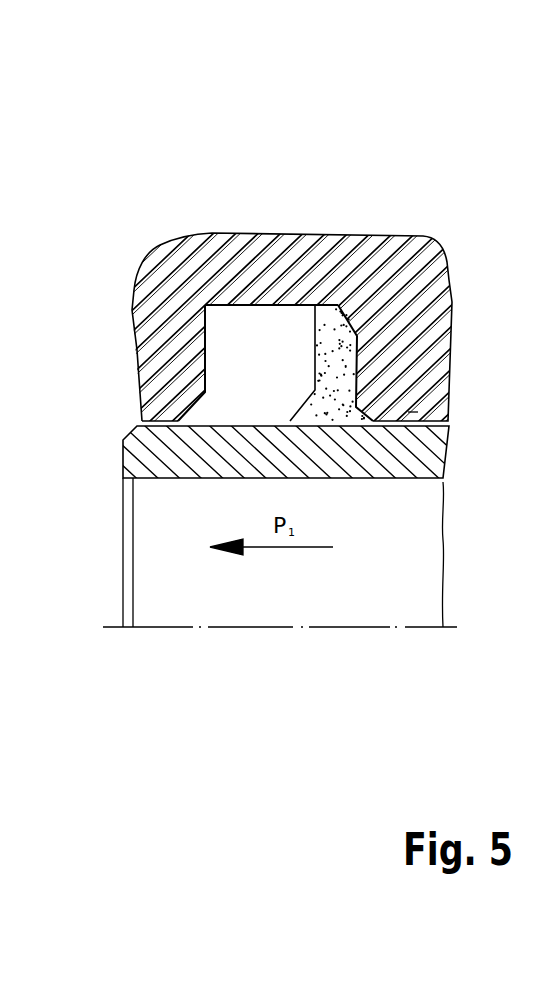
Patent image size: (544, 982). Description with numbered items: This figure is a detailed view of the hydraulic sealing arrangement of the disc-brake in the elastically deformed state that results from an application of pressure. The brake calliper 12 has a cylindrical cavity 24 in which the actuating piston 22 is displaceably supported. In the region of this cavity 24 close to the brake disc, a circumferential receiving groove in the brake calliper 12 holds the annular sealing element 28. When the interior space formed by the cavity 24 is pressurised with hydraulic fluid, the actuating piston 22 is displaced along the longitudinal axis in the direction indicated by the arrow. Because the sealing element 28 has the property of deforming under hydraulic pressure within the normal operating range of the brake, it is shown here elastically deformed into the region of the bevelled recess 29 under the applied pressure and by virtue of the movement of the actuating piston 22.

The brake calliper 12 is at (225, 247).
The actuating piston 22 is at (447, 438).
The cylindrical cavity 24 is at (360, 318).
The annular sealing element 28 is at (272, 322).
The bevelled recess 29 is at (193, 397).